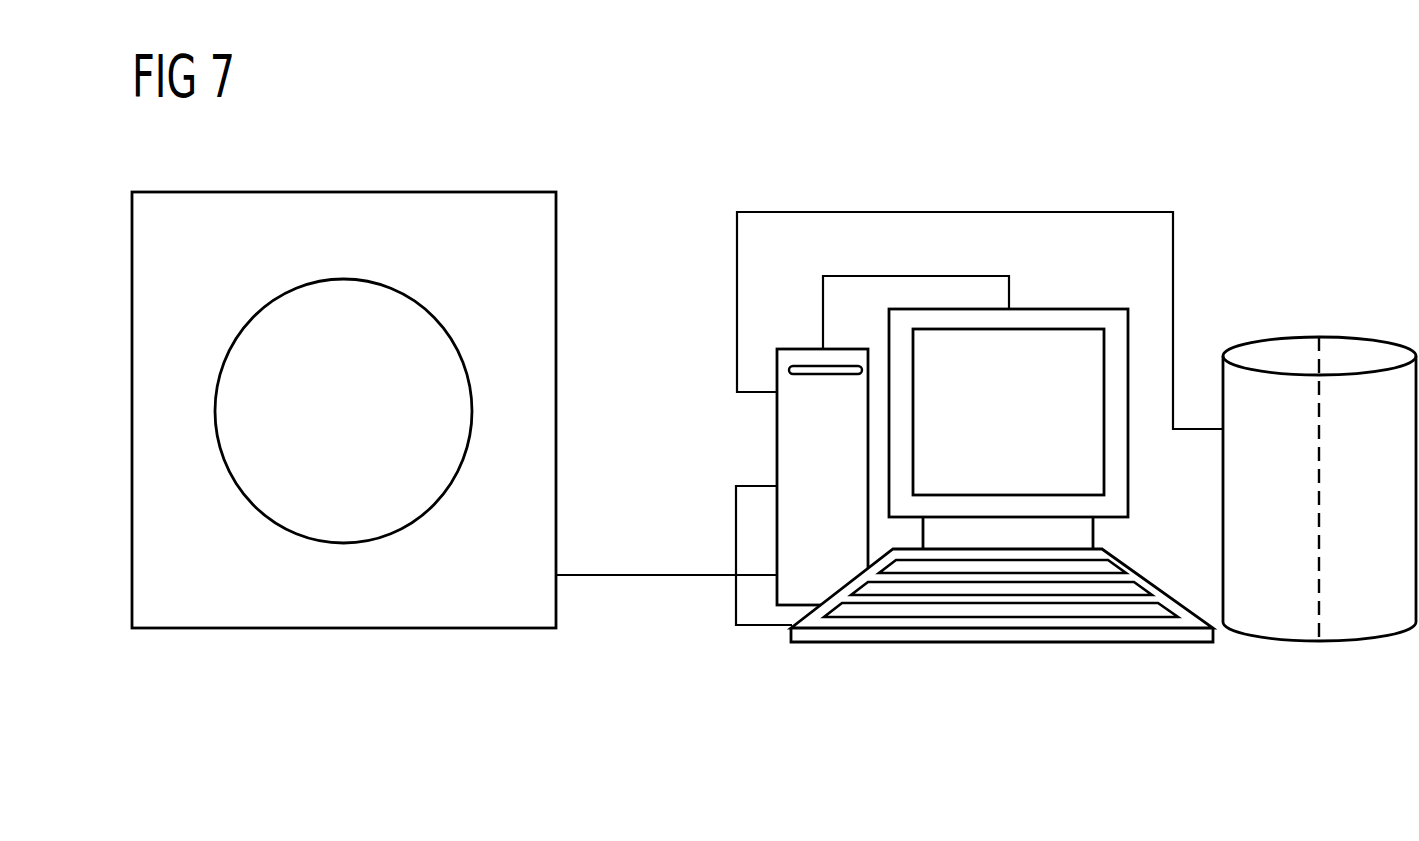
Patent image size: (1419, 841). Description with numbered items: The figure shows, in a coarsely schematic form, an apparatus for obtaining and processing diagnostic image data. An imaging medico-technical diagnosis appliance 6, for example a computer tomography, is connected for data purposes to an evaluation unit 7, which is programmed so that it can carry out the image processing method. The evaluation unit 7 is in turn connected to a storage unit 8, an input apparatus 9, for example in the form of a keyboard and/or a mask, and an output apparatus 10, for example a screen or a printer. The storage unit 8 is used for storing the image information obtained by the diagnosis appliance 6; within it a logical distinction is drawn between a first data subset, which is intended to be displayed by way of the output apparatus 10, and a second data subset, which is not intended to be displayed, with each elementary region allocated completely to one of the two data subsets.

The imaging medico-technical diagnosis appliance 6 is at (366, 595).
The evaluation unit 7 is at (777, 443).
The storage unit 8 is at (1356, 640).
The input apparatus 9 is at (965, 643).
The output apparatus 10 is at (1066, 309).